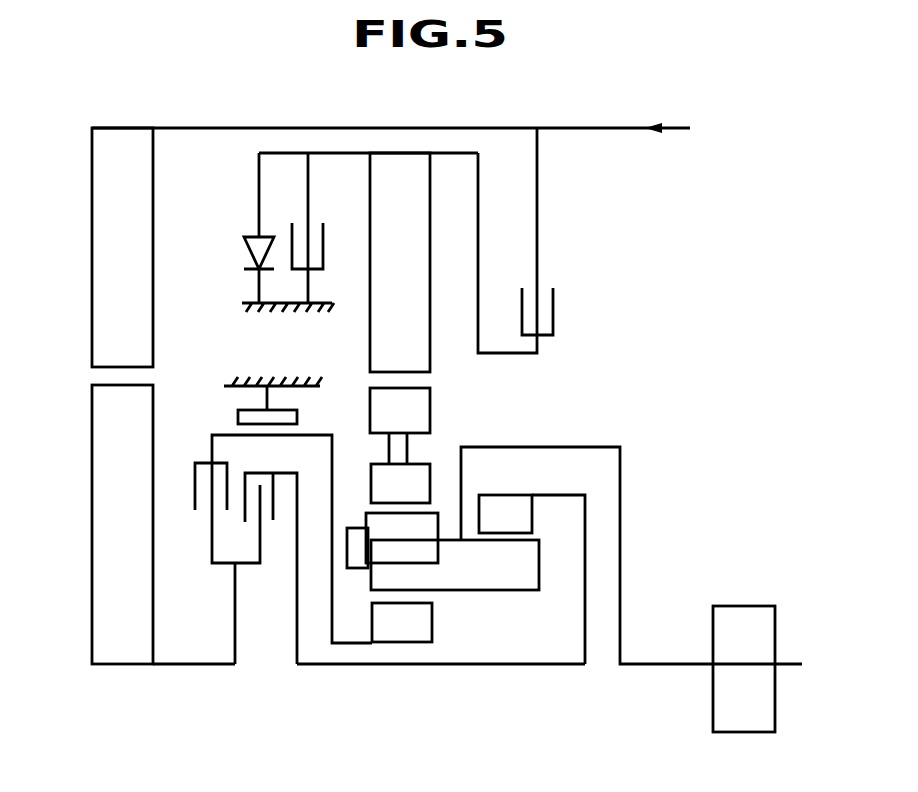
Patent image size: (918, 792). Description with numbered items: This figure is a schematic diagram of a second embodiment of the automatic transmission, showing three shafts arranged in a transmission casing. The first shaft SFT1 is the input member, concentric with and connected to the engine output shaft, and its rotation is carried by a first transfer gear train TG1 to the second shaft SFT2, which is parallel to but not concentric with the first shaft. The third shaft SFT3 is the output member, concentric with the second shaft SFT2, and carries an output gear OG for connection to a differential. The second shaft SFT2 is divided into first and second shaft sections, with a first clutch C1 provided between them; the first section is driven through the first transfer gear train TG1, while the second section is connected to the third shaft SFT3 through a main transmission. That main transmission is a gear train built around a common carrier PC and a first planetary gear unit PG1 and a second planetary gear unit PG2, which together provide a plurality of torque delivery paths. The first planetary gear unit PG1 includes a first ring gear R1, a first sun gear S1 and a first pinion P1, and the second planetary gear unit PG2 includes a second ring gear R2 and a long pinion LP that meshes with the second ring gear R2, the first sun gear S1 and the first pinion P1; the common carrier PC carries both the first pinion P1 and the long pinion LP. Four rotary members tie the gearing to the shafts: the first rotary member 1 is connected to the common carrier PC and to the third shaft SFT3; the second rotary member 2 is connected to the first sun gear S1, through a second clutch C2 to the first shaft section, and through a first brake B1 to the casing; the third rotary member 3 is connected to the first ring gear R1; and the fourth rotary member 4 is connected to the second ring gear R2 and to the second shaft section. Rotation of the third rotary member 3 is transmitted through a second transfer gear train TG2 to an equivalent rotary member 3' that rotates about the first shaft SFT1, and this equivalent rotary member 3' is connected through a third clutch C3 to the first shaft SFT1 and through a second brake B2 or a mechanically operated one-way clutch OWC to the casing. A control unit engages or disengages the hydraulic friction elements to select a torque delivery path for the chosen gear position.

The first rotary member 1 is at (590, 443).
The second rotary member 2 is at (337, 484).
The third rotary member 3 is at (462, 426).
The equivalent rotary member 3' is at (381, 109).
The fourth rotary member 4 is at (579, 628).
The first shaft SFT1 is at (582, 125).
The second shaft SFT2 is at (300, 669).
The third shaft SFT3 is at (672, 670).
The first transfer gear train TG1 is at (95, 396).
The second transfer gear train TG2 is at (429, 308).
The one-way clutch OWC is at (263, 232).
The first brake B1 is at (253, 400).
The second brake B2 is at (325, 228).
The first clutch C1 is at (271, 555).
The second clutch C2 is at (201, 473).
The third clutch C3 is at (557, 311).
The common carrier PC is at (462, 482).
The first ring gear R1 is at (400, 483).
The second ring gear R2 is at (505, 514).
The first pinion P1 is at (392, 540).
The long pinion LP is at (455, 565).
The first sun gear S1 is at (402, 622).
The first planetary gear unit PG1 is at (368, 672).
The second planetary gear unit PG2 is at (469, 672).
The output gear OG is at (748, 603).